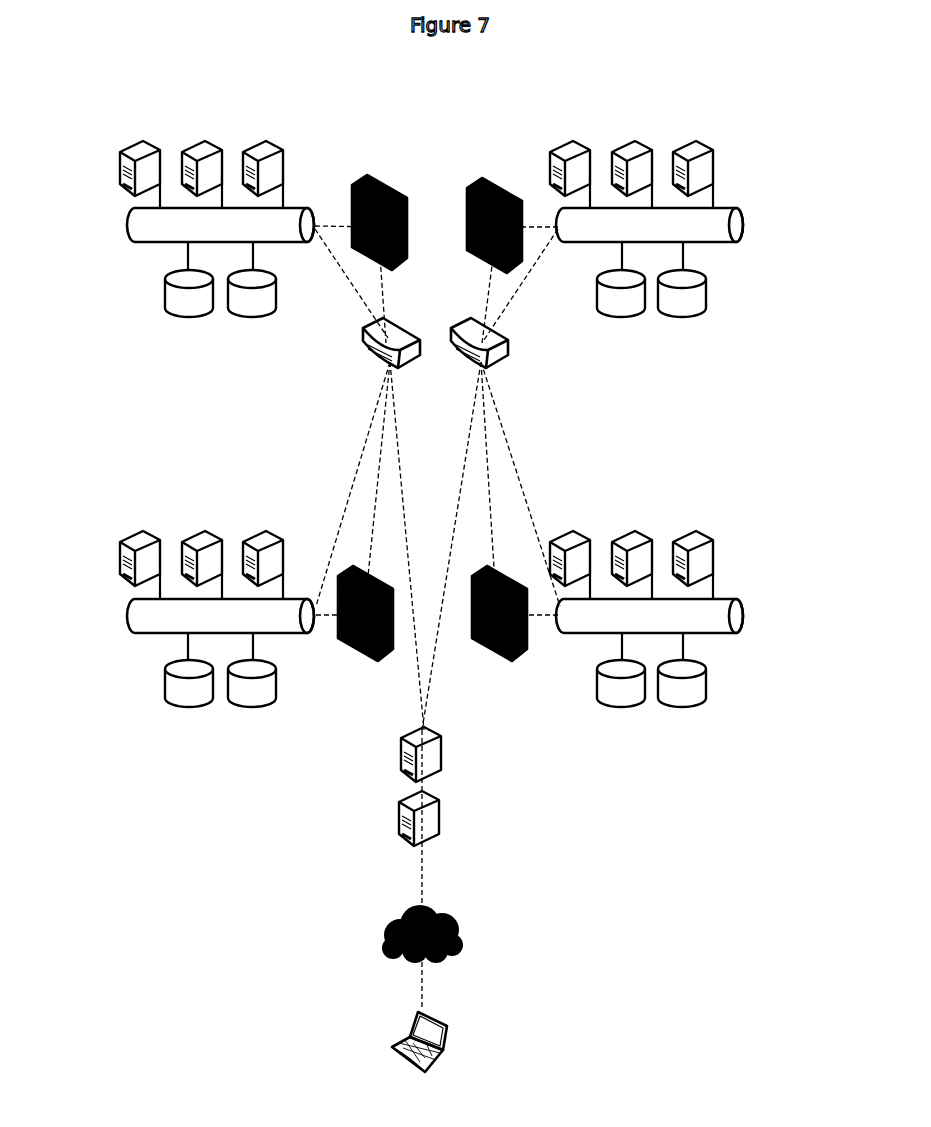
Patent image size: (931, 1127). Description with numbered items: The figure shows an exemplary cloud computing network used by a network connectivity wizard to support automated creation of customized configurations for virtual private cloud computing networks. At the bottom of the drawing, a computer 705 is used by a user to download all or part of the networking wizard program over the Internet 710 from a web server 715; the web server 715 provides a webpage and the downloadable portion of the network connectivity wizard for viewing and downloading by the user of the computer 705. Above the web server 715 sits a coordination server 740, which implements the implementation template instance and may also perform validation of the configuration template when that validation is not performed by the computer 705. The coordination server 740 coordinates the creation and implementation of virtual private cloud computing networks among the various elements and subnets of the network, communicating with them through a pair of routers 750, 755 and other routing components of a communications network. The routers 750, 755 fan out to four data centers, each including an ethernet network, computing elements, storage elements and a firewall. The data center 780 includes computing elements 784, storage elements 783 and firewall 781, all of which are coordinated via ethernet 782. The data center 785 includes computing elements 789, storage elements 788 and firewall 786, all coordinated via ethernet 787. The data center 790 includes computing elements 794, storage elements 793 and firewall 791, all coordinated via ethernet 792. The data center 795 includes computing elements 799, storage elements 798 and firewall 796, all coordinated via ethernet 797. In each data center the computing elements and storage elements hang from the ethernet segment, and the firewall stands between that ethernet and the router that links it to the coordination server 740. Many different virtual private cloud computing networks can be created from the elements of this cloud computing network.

The computer 705 is at (476, 1042).
The Internet 710 is at (466, 934).
The web server 715 is at (457, 832).
The coordination server 740 is at (353, 769).
The router 750 is at (353, 344).
The router 755 is at (519, 345).
The data center 780 is at (177, 231).
The firewall 781 is at (374, 188).
The ethernet 782 is at (220, 225).
The storage elements 783 is at (202, 319).
The computing elements 784 is at (201, 136).
The data center 785 is at (689, 239).
The firewall 786 is at (496, 190).
The ethernet 787 is at (649, 225).
The storage elements 788 is at (654, 328).
The computing elements 789 is at (631, 136).
The data center 790 is at (681, 616).
The firewall 791 is at (502, 637).
The ethernet 792 is at (649, 616).
The storage elements 793 is at (649, 707).
The computing elements 794 is at (631, 525).
The data center 795 is at (186, 608).
The firewall 796 is at (361, 639).
The ethernet 797 is at (220, 616).
The storage elements 798 is at (219, 707).
The computing elements 799 is at (201, 517).